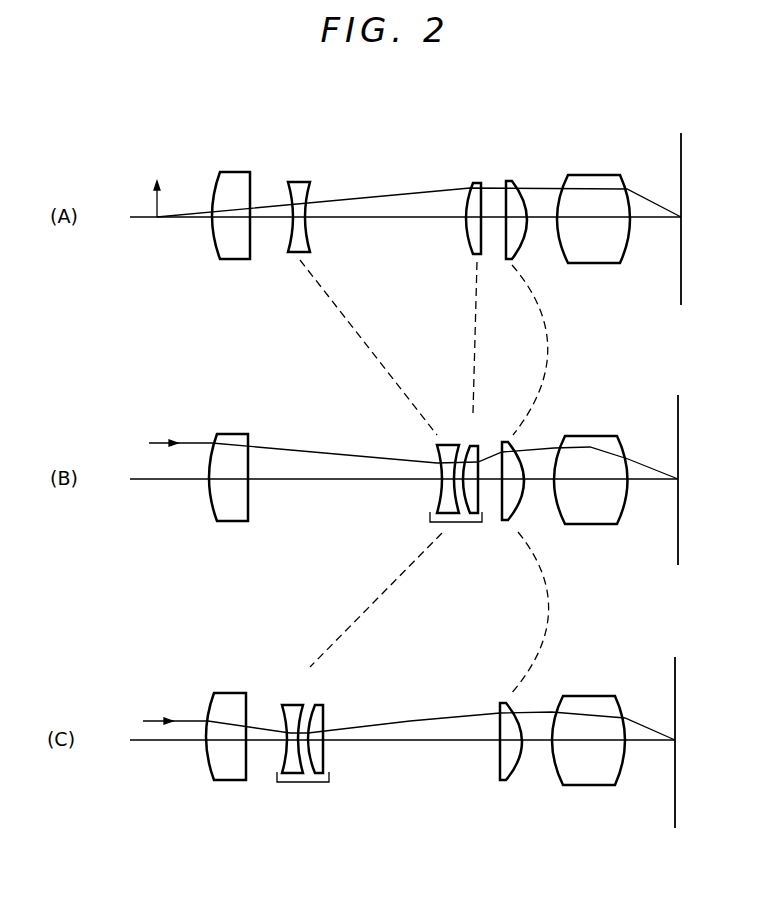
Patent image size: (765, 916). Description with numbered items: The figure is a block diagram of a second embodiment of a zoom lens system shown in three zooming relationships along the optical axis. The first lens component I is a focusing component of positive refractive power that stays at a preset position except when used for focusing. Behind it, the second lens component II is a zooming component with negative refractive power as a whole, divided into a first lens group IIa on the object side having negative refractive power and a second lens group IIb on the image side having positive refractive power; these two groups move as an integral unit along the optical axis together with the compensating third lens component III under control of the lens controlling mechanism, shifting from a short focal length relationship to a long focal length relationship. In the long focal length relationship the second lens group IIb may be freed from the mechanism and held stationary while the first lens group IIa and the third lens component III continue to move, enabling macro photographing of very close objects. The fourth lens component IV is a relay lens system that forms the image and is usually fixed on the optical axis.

The first lens component I is at (228, 493).
The first lens group IIa is at (372, 461).
The second lens group IIb is at (399, 462).
The second lens component II is at (379, 664).
The third lens component III is at (506, 499).
The fourth lens component IV is at (591, 496).